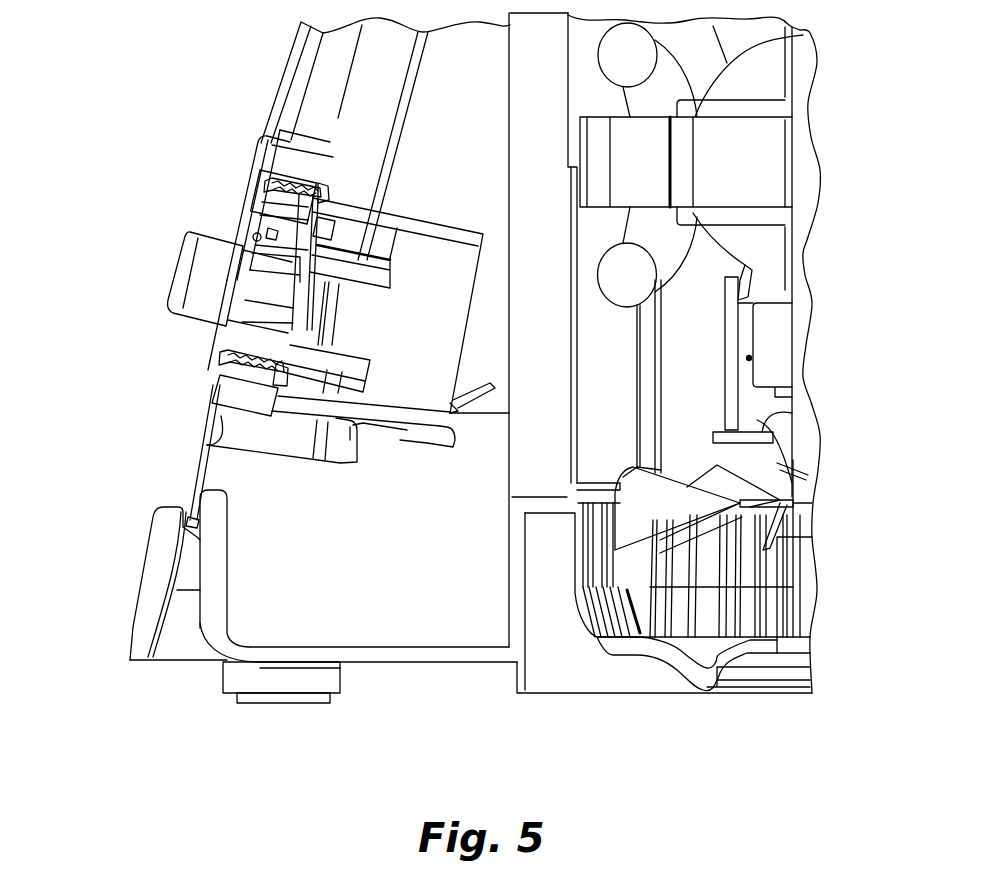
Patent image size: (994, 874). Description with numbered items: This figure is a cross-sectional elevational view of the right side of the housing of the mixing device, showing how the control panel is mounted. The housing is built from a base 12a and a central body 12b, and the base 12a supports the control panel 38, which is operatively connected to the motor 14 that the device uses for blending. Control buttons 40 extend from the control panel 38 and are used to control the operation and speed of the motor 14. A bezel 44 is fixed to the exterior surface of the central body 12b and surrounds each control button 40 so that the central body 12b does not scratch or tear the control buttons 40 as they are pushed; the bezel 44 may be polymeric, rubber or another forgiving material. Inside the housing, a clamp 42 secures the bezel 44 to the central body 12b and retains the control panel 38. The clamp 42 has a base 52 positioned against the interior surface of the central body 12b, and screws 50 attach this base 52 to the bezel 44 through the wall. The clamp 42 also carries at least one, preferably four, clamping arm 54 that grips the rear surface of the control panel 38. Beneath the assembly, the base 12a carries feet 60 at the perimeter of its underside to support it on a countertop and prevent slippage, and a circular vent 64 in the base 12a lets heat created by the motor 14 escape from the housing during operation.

The base 12a is at (148, 598).
The central body 12b is at (290, 70).
The motor 14 is at (822, 238).
The control panel 38 is at (373, 275).
The control buttons 40 is at (170, 283).
The clamp 42 is at (263, 430).
The bezel 44 is at (243, 187).
The screws 50 is at (217, 362).
The base of the clamp 52 is at (230, 397).
The clamping arm 54 is at (412, 414).
The feet 60 is at (222, 683).
The circular vent 64 is at (657, 608).